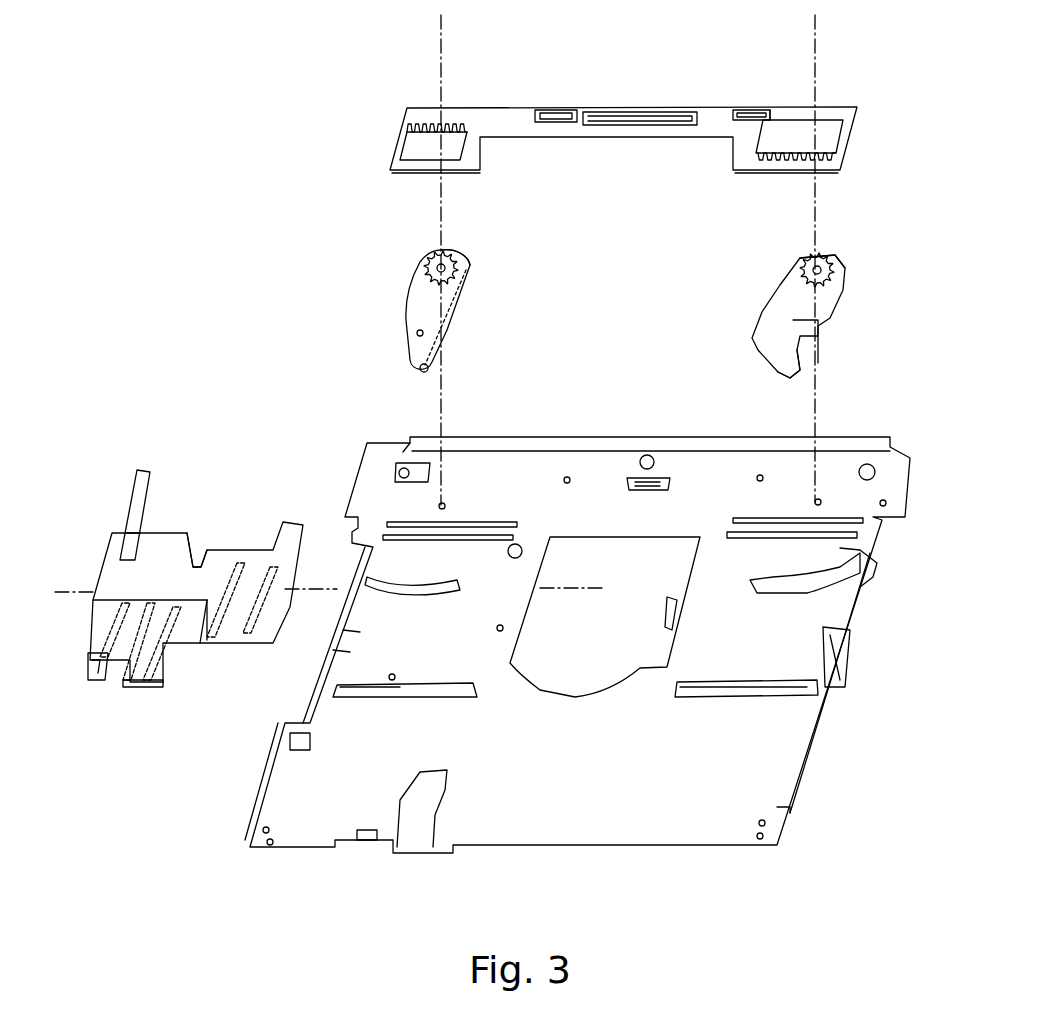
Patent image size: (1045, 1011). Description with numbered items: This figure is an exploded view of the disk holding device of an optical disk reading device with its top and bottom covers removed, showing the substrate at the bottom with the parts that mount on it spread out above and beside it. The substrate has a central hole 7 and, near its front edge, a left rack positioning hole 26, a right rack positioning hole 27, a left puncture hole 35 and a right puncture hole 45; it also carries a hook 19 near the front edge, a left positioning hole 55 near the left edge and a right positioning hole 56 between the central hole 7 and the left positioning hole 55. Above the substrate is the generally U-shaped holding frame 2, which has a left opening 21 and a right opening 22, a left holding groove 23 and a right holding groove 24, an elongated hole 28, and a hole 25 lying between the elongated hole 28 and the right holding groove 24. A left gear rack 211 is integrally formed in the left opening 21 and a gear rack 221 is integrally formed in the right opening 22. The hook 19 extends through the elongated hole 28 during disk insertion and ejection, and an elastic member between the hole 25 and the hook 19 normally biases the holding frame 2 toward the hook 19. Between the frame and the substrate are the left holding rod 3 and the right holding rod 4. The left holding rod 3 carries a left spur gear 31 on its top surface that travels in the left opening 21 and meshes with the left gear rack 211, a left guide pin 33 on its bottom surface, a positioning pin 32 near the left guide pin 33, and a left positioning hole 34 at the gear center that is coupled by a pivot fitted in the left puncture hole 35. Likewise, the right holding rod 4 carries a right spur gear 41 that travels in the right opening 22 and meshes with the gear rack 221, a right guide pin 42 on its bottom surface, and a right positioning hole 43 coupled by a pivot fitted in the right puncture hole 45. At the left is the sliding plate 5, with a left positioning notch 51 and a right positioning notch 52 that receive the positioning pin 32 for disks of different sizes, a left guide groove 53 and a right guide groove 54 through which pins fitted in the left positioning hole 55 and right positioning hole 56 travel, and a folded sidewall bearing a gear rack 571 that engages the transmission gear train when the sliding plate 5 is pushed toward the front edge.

The holding frame 2 is at (520, 110).
The left opening 21 is at (417, 143).
The left gear rack 211 is at (438, 122).
The right opening 22 is at (853, 143).
The gear rack 221 is at (793, 160).
The left holding groove 23 is at (580, 108).
The right holding groove 24 is at (770, 110).
The hole 25 is at (727, 110).
The elongated hole 28 is at (647, 110).
The left holding rod 3 is at (452, 315).
The left spur gear 31 is at (462, 258).
The positioning pin 32 is at (424, 333).
The left guide pin 33 is at (428, 370).
The left positioning hole 34 is at (450, 255).
The right holding rod 4 is at (822, 303).
The right spur gear 41 is at (840, 257).
The right guide pin 42 is at (797, 377).
The right positioning hole 43 is at (797, 260).
The hook 19 is at (653, 487).
The left rack positioning hole 26 is at (568, 484).
The right rack positioning hole 27 is at (760, 475).
The left puncture hole 35 is at (447, 505).
The right puncture hole 45 is at (820, 502).
The sliding plate 5 is at (110, 573).
The left positioning notch 51 is at (143, 530).
The right positioning notch 52 is at (197, 557).
The left guide groove 53 is at (153, 683).
The right guide groove 54 is at (253, 640).
The left positioning hole 55 is at (395, 675).
The right positioning hole 56 is at (500, 625).
The gear rack 571 is at (93, 670).
The central hole 7 is at (645, 641).